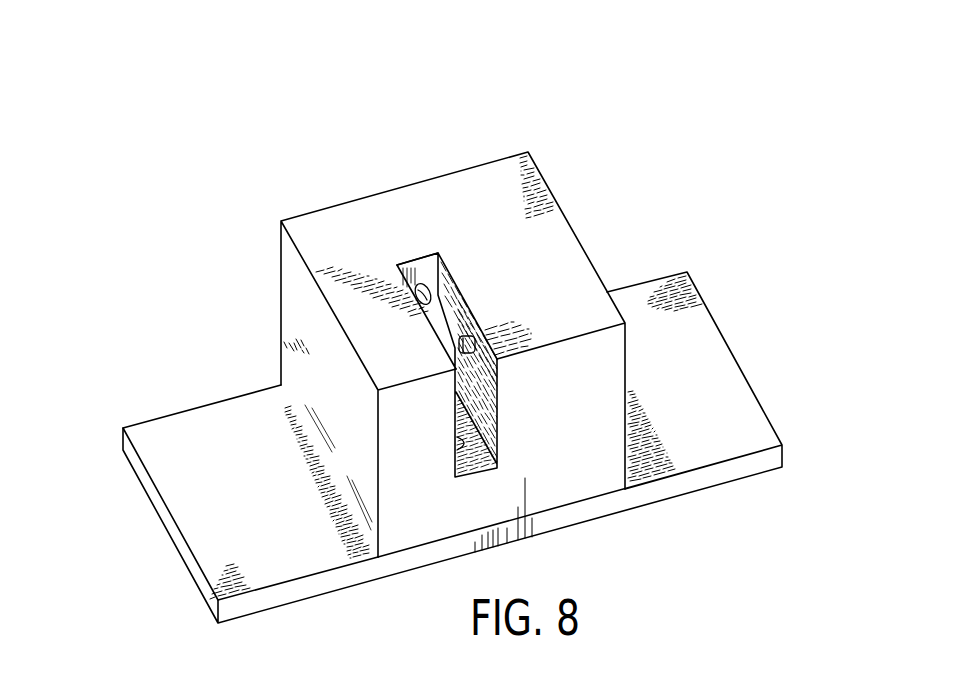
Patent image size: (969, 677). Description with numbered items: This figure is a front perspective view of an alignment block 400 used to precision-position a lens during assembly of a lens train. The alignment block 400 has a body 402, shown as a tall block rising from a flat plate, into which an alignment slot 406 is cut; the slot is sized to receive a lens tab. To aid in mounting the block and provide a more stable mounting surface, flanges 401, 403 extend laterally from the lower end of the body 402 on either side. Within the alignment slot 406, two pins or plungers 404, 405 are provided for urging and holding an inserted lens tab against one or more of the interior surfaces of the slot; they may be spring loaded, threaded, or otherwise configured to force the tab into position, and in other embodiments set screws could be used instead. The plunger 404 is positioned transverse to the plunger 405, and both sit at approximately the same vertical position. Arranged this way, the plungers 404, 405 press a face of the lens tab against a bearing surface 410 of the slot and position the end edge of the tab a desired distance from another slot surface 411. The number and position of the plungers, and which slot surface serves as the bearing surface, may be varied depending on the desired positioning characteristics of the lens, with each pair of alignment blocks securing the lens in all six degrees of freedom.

The alignment block 400 is at (215, 166).
The flange 401 is at (735, 382).
The body 402 is at (328, 206).
The flange 403 is at (172, 427).
The plunger 404 is at (425, 288).
The plunger 405 is at (463, 332).
The alignment slot 406 is at (479, 416).
The bearing surface 410 is at (468, 440).
The surface 411 is at (427, 268).